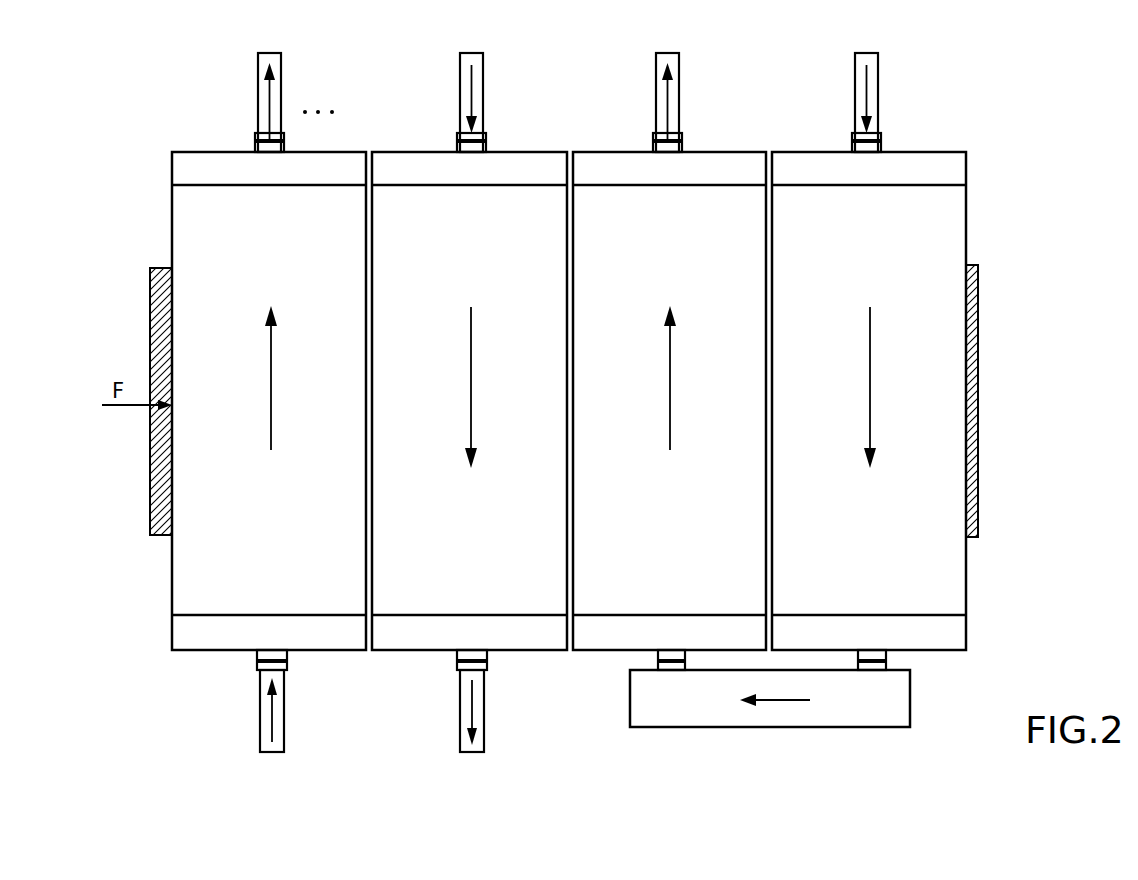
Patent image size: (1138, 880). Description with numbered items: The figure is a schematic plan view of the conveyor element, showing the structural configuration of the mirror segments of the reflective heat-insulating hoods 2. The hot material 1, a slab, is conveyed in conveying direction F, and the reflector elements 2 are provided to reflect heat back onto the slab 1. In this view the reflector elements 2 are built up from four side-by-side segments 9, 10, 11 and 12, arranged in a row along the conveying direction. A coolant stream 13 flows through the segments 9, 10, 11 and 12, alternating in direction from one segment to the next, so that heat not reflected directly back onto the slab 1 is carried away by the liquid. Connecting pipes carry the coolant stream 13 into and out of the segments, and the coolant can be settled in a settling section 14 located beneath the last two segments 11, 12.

The hot material 1 is at (165, 298).
The reflector elements 2 is at (800, 118).
The segment 9 is at (207, 237).
The segment 10 is at (415, 212).
The segment 11 is at (622, 218).
The segment 12 is at (838, 218).
The coolant stream 13 is at (270, 100).
The settling section 14 is at (945, 640).